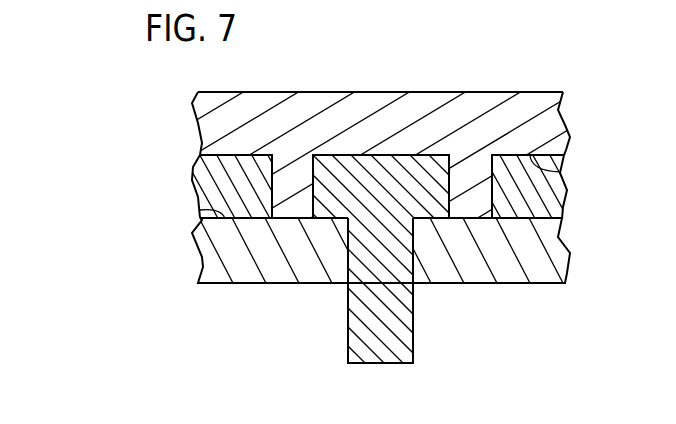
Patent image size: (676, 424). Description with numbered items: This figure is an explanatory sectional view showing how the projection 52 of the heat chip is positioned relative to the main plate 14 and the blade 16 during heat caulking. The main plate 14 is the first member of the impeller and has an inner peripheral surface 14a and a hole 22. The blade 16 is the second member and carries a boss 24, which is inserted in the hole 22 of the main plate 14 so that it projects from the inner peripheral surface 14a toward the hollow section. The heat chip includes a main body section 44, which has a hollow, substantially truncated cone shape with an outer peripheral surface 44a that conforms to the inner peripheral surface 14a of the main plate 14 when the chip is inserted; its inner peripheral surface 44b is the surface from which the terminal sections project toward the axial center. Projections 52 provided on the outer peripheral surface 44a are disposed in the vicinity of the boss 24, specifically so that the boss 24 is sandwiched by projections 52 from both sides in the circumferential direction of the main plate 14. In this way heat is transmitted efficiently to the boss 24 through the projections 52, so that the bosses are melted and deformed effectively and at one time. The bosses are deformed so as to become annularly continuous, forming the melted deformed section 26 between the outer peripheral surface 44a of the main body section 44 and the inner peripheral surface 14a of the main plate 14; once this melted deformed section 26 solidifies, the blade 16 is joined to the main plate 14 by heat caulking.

The main plate 14 is at (538, 255).
The inner peripheral surface of the main plate 14a is at (200, 210).
The blade 16 is at (346, 342).
The hole 22 is at (410, 258).
The boss 24 is at (385, 178).
The melted deformed section 26 is at (385, 178).
The main body section 44 is at (550, 127).
The outer peripheral surface of the main body section 44a is at (547, 173).
The inner peripheral surface of the main body section 44b is at (517, 92).
The projection 52 is at (290, 188).